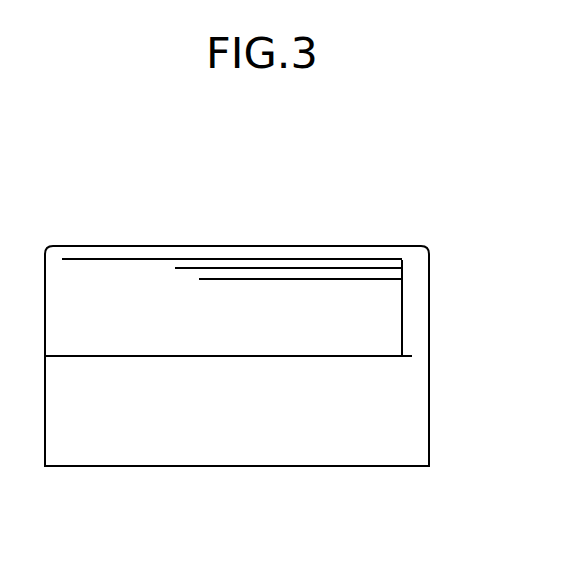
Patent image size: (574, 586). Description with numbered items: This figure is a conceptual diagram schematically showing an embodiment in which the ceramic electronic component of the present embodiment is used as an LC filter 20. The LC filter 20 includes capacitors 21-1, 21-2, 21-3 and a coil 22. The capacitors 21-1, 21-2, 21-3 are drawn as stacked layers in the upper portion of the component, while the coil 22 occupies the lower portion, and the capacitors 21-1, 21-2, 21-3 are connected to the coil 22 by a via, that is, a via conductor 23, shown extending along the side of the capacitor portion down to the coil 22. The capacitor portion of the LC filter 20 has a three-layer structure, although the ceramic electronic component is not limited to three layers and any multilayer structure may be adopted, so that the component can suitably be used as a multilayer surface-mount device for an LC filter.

The LC filter 20 is at (389, 191).
The capacitor 21-1 is at (147, 259).
The capacitor 21-2 is at (218, 268).
The capacitor 21-3 is at (292, 279).
The coil 22 is at (277, 357).
The via 23 is at (403, 318).